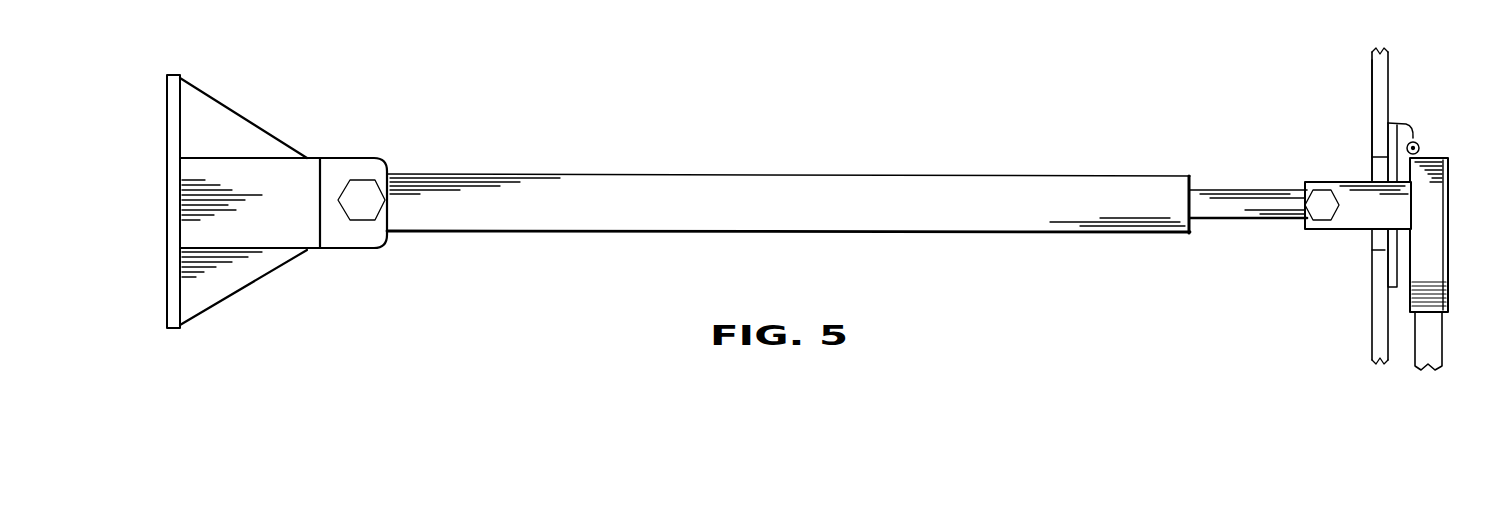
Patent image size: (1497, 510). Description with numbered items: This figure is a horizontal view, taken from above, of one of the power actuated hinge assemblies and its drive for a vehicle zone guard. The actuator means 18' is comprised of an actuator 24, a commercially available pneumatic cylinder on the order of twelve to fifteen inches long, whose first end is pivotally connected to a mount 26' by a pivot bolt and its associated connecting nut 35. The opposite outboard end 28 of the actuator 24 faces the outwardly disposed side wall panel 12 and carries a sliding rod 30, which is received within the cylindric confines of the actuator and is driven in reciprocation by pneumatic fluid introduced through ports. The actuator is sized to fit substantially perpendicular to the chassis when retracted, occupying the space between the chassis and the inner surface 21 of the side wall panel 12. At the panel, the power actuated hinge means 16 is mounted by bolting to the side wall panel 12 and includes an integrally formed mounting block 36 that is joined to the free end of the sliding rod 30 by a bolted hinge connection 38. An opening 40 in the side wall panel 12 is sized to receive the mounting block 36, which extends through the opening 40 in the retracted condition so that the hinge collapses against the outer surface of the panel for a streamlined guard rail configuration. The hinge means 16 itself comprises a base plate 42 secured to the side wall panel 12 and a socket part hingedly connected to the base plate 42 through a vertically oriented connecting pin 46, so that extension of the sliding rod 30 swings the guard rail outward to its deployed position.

The mount 26' is at (243, 188).
The connecting nut 35 is at (388, 233).
The actuator means 18' is at (788, 164).
The actuator 24 is at (823, 176).
The outboard end 28 is at (1188, 174).
The sliding rod 30 is at (1240, 222).
The mounting block 36 is at (1333, 232).
The bolted hinge connection 38 is at (1308, 185).
The side wall panel 12 is at (1388, 60).
The inner surface 21 is at (1372, 87).
The opening 40 is at (1378, 168).
The base plate 42 is at (1390, 124).
The connecting pin 46 is at (1418, 143).
The power actuated hinge means 16 is at (1442, 150).